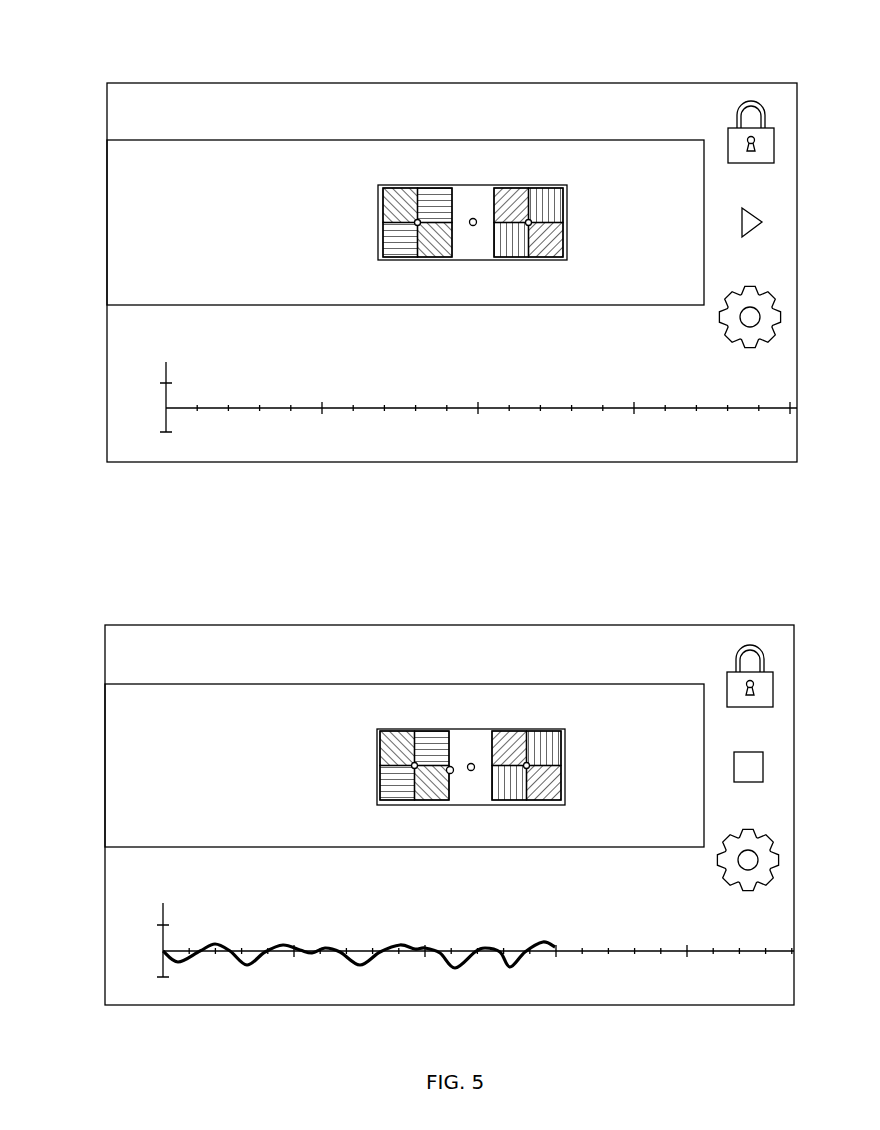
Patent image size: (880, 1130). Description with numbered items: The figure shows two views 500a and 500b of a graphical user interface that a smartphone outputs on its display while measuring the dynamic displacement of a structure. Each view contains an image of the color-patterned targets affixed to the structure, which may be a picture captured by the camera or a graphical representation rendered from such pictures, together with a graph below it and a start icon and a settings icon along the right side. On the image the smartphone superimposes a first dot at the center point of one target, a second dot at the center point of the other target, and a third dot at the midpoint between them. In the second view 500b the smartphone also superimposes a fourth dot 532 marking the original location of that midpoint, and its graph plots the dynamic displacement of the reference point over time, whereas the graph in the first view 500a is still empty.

The view 500a is at (680, 58).
The view 500b is at (695, 600).
The fourth dot 532 is at (451, 774).